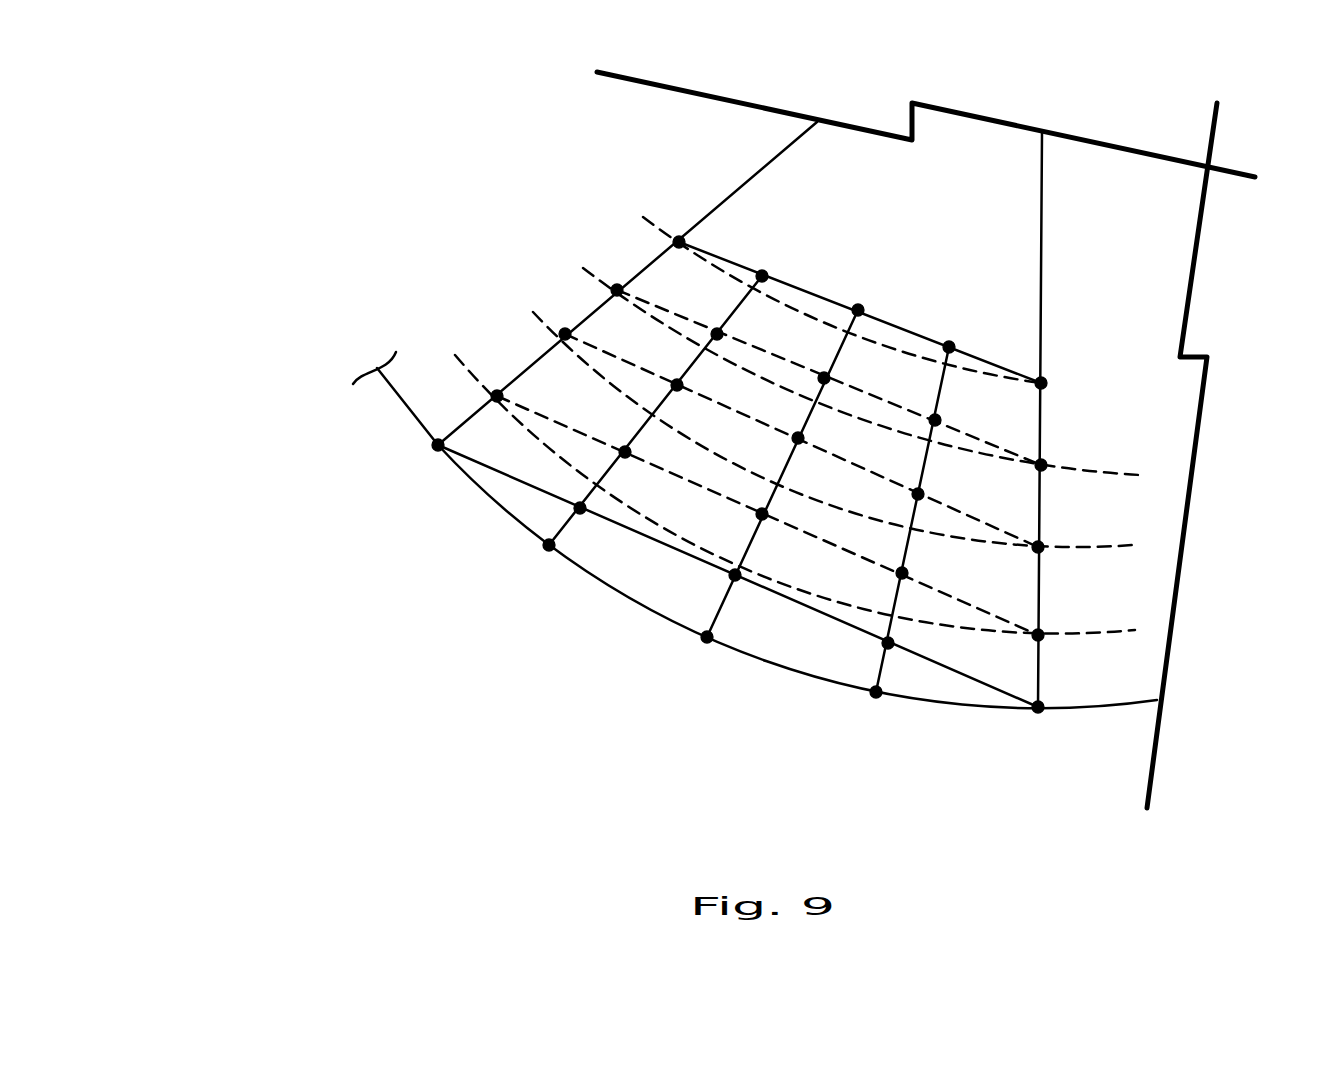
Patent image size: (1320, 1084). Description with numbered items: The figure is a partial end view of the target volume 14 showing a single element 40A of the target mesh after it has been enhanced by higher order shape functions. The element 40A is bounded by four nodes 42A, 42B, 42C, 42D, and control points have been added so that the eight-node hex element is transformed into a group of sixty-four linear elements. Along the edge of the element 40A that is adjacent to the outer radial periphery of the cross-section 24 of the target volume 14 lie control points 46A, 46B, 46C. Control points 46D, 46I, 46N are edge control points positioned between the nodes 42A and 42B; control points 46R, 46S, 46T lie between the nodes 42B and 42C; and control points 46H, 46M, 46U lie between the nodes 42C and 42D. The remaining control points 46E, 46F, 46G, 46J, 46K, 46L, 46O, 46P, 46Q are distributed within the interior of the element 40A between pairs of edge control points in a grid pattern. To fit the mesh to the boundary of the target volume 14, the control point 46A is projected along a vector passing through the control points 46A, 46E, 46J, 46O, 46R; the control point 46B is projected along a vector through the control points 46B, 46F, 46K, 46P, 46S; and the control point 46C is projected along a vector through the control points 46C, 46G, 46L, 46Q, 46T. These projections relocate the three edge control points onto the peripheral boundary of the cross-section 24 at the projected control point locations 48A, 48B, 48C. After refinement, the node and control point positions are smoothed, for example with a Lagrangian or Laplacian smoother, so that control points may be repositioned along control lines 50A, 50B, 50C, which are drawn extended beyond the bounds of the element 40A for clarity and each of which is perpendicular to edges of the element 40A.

The target volume 14 is at (262, 414).
The cross-section of target volume 24 is at (617, 592).
The element 40A is at (550, 236).
The node 42A is at (438, 445).
The node 42B is at (679, 242).
The node 42C is at (1041, 383).
The node 42D is at (1038, 707).
The control point 46A is at (580, 508).
The control point 46B is at (735, 575).
The control point 46C is at (888, 643).
The control point 46D is at (497, 396).
The control point 46E is at (625, 452).
The control point 46F is at (762, 514).
The control point 46G is at (902, 573).
The control point 46H is at (1038, 635).
The control point 46I is at (565, 334).
The control point 46J is at (677, 385).
The control point 46K is at (798, 438).
The control point 46L is at (918, 494).
The control point 46M is at (1038, 547).
The control point 46N is at (617, 290).
The control point 46O is at (717, 334).
The control point 46P is at (824, 378).
The control point 46Q is at (935, 420).
The control point 46R is at (762, 276).
The control point 46S is at (858, 310).
The control point 46T is at (949, 347).
The control point 46U is at (1041, 465).
The projected control point location 48A is at (549, 545).
The projected control point location 48B is at (707, 637).
The projected control point location 48C is at (876, 692).
The control line 50A is at (1100, 628).
The control line 50B is at (1113, 545).
The control line 50C is at (1112, 475).